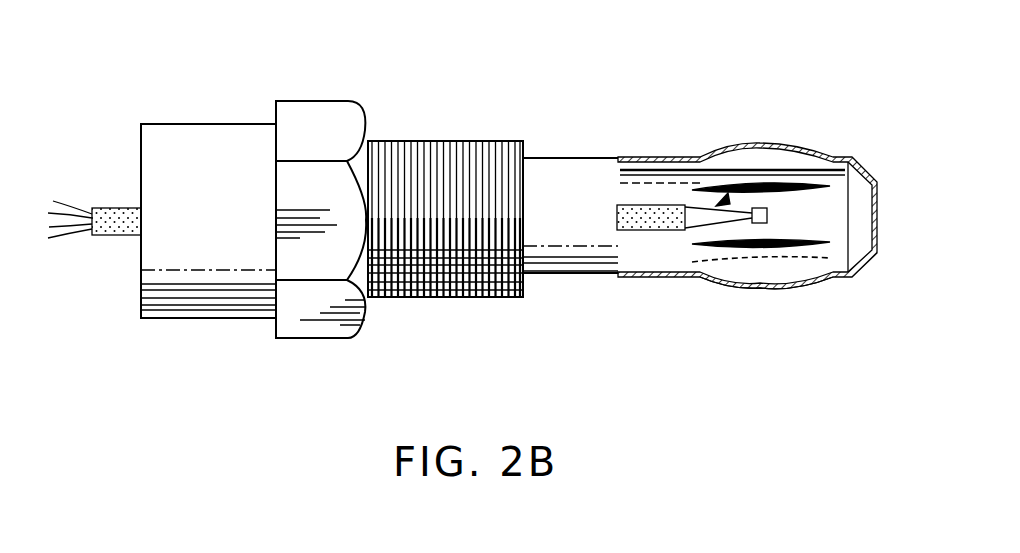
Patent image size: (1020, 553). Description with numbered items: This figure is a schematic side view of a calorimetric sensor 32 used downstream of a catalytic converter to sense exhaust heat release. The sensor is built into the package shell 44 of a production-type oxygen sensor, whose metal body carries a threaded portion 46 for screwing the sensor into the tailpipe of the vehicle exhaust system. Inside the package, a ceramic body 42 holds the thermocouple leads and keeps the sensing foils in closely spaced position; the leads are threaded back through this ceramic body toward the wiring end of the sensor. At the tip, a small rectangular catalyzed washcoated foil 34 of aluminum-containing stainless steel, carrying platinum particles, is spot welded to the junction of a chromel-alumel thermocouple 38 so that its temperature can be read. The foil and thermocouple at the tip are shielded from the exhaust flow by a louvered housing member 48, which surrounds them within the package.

The calorimetric sensor 32 is at (630, 150).
The catalyzed washcoated foil 34 is at (762, 215).
The thermocouple 38 is at (722, 200).
The ceramic body 42 is at (657, 208).
The package shell 44 is at (328, 125).
The threaded portion 46 is at (445, 150).
The louvered housing member 48 is at (765, 287).